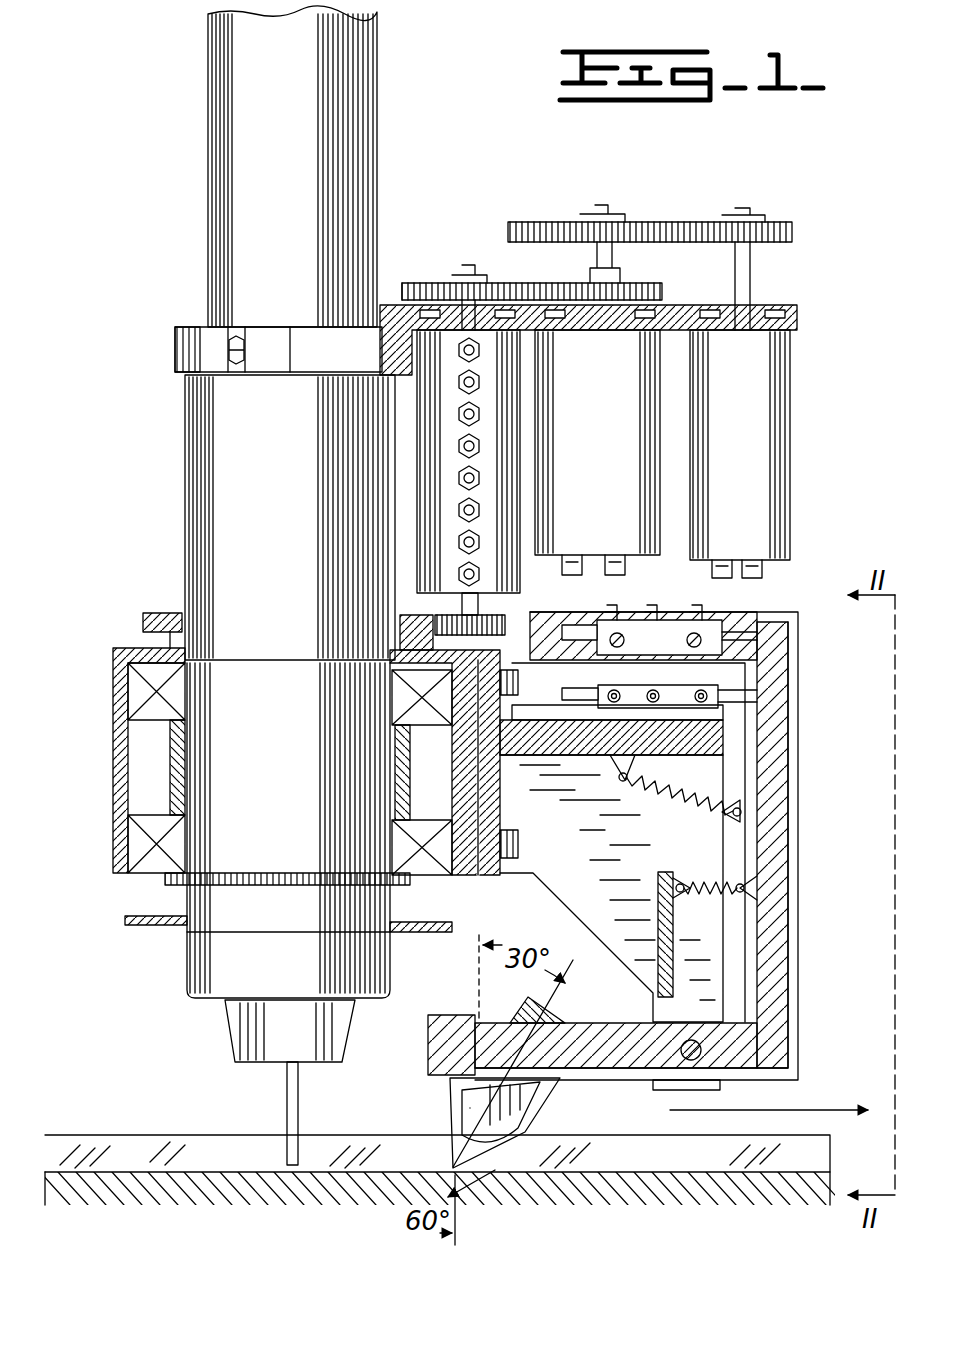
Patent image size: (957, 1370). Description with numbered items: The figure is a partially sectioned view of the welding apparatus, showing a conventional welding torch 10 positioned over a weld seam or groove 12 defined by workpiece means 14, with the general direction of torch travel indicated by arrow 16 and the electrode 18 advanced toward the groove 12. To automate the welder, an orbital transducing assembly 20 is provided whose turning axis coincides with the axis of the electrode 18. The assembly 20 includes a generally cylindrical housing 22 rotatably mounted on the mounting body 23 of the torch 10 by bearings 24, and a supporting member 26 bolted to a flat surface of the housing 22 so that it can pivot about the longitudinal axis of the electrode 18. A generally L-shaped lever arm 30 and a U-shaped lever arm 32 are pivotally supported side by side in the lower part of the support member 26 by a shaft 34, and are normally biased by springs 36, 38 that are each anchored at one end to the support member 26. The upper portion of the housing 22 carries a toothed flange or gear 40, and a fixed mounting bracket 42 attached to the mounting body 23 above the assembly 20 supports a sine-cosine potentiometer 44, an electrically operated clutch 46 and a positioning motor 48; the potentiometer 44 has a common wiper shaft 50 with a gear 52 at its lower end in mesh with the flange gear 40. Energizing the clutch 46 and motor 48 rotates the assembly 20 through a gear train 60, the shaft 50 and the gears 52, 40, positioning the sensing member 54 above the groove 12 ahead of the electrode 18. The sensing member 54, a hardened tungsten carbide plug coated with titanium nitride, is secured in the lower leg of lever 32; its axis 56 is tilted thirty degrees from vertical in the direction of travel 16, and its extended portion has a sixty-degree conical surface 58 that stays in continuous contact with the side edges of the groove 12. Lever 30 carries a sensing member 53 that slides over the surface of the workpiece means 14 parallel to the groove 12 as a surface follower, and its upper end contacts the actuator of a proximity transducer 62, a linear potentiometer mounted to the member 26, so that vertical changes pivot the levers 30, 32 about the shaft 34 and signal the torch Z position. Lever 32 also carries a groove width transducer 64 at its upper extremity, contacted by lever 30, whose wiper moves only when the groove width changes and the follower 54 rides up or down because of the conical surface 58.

The welding torch 10 is at (180, 445).
The weld seam or groove 12 is at (118, 1140).
The workpiece means 14 is at (615, 1200).
The arrow indicating direction of travel 16 is at (820, 1108).
The electrode 18 is at (287, 1104).
The orbital transducing assembly 20 is at (800, 686).
The cylindrical housing 22 is at (120, 768).
The mounting body 23 is at (195, 512).
The bearings 24 is at (135, 692).
The supporting member 26 is at (598, 850).
The L-shaped lever arm 30 is at (782, 800).
The U-shaped lever arm 32 is at (547, 612).
The shaft 34 is at (702, 1052).
The spring 36 is at (705, 895).
The spring 38 is at (690, 805).
The toothed flange or gear 40 is at (150, 618).
The fixed mounting bracket 42 is at (183, 345).
The sine-cosine potentiometer 44 is at (462, 448).
The electrically operated clutch 46 is at (608, 452).
The positioning motor 48 is at (751, 452).
The wiper shaft 50 is at (462, 603).
The gear 52 is at (515, 616).
The sensing member 53 is at (462, 1108).
The sensing member 54 is at (540, 1100).
The axis of the sensing member 56 is at (553, 982).
The conical surface 58 is at (495, 1140).
The gear train 60 is at (660, 222).
The proximity transducer 62 is at (600, 688).
The groove width transducer 64 is at (675, 650).